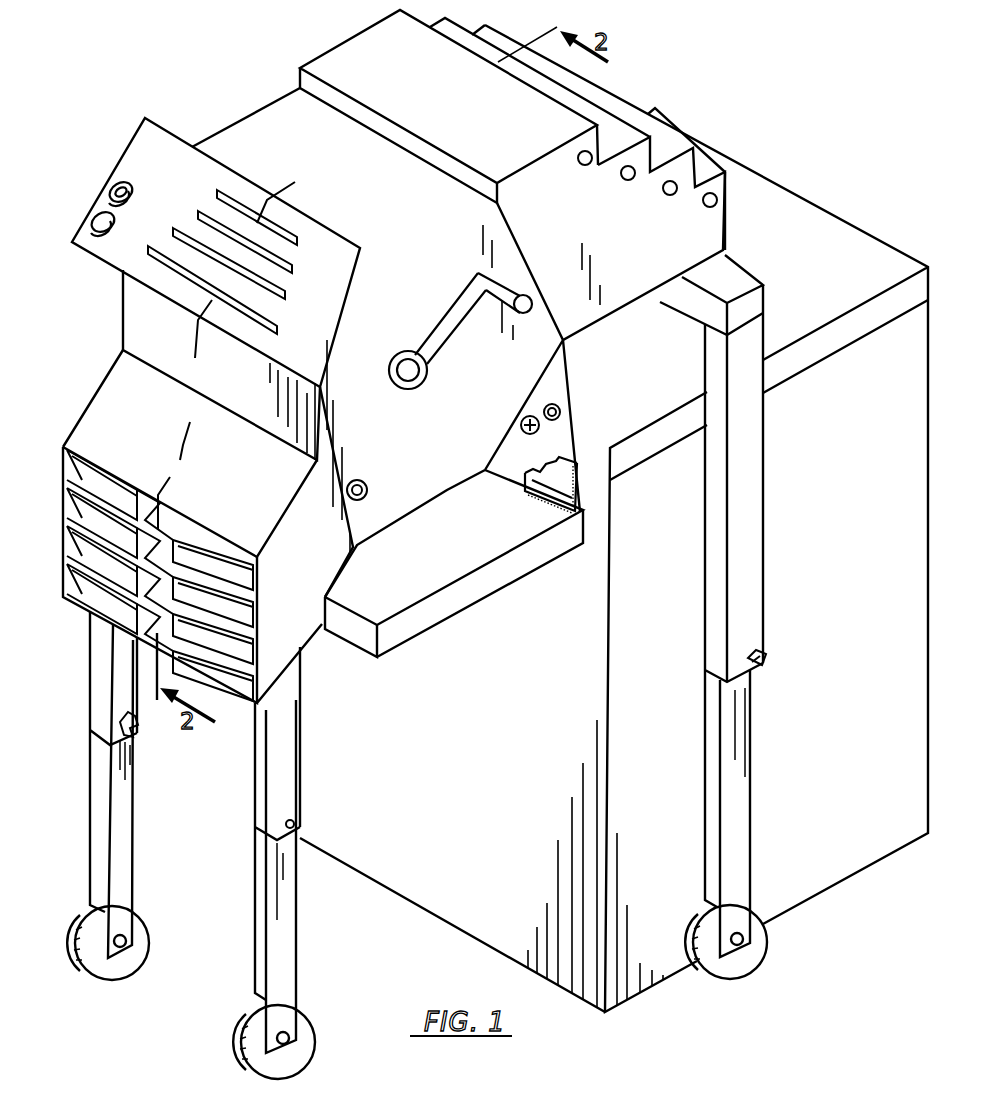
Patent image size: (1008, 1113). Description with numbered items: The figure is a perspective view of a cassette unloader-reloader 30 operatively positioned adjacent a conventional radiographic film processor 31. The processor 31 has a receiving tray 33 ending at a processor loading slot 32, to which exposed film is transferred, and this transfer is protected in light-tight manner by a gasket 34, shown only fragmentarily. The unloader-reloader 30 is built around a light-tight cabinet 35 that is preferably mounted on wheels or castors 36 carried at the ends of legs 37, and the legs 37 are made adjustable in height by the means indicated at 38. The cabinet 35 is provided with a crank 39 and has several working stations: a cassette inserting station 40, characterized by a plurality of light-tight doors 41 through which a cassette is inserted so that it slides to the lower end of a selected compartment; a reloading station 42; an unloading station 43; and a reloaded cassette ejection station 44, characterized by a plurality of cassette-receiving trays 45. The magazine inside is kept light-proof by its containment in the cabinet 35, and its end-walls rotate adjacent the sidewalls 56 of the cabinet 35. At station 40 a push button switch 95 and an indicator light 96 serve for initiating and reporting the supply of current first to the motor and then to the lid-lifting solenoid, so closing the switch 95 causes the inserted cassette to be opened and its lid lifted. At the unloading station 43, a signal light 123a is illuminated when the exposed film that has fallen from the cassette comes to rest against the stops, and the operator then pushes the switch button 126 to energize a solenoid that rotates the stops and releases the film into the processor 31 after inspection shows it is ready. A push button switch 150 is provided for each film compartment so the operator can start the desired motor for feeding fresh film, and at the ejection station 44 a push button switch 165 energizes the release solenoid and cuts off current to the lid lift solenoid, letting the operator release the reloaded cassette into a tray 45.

The unloader-reloader 30 is at (630, 85).
The radiographic film processor 31 is at (804, 190).
The processor loading slot 32 is at (578, 500).
The receiving tray 33 is at (486, 590).
The gasket 34 is at (580, 462).
The light-tight cabinet 35 is at (422, 490).
The wheels or castors 36 is at (125, 988).
The legs 37 is at (125, 855).
The height adjusting means 38 is at (138, 728).
The crank 39 is at (462, 300).
The cassette inserting station 40 is at (199, 197).
The light-tight doors 41 is at (292, 297).
The reloading station 42 is at (487, 125).
The unloading station 43 is at (520, 450).
The reloaded cassette ejection station 44 is at (247, 495).
The cassette-receiving trays 45 is at (255, 580).
The sidewalls 56 is at (388, 425).
The push button switch 95 is at (98, 212).
The indicator light 96 is at (116, 183).
The signal light 123a is at (532, 415).
The switch button 126 is at (560, 404).
The push button switch 150 is at (705, 208).
The push button switch 165 is at (367, 487).